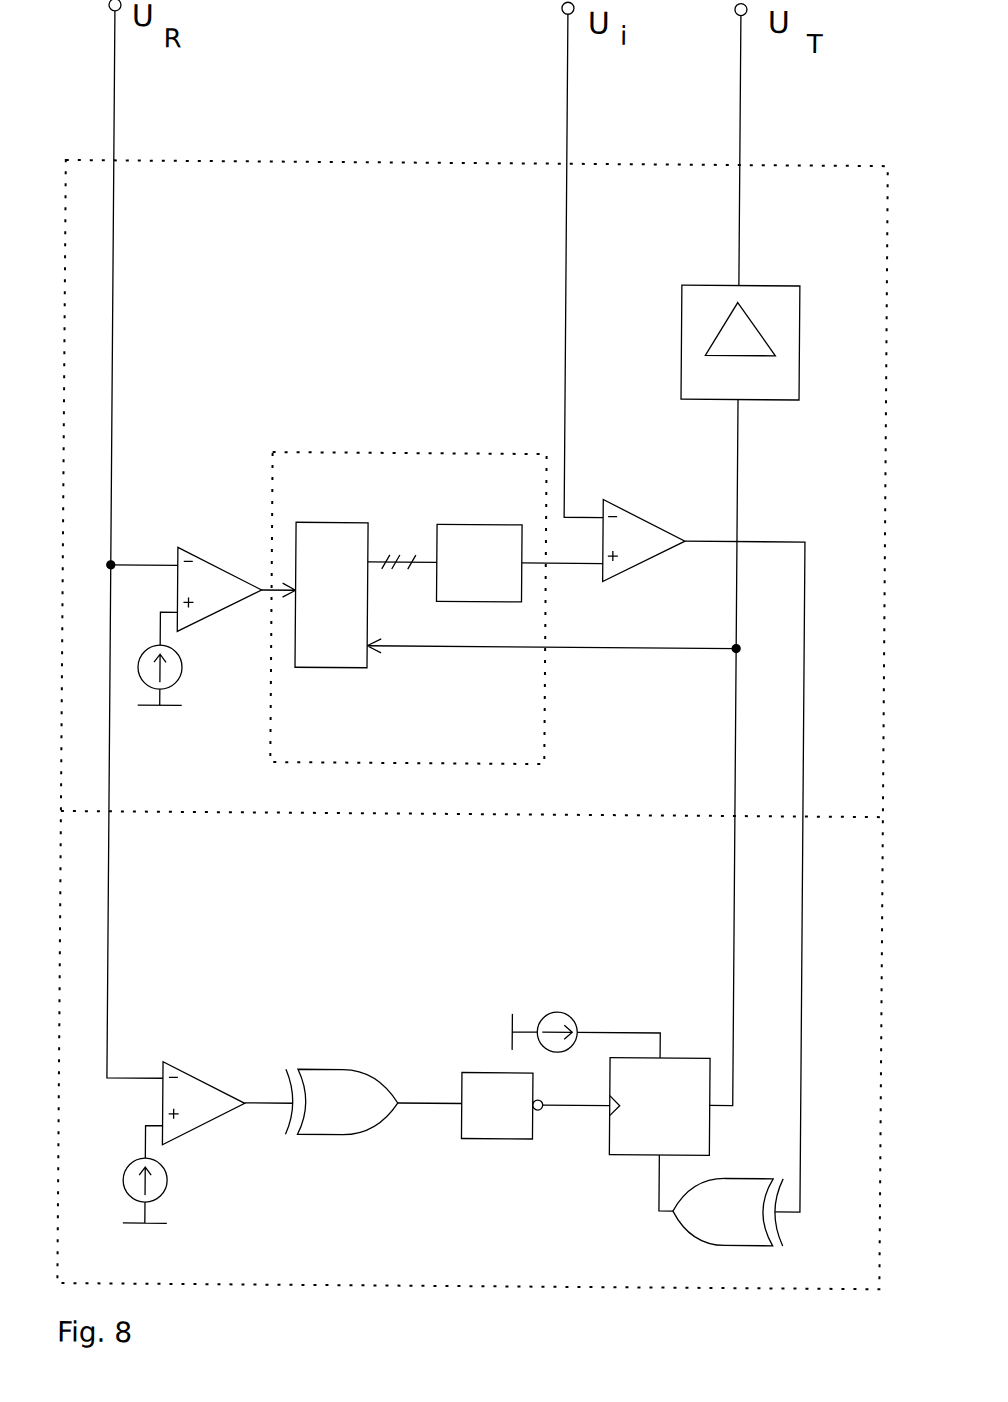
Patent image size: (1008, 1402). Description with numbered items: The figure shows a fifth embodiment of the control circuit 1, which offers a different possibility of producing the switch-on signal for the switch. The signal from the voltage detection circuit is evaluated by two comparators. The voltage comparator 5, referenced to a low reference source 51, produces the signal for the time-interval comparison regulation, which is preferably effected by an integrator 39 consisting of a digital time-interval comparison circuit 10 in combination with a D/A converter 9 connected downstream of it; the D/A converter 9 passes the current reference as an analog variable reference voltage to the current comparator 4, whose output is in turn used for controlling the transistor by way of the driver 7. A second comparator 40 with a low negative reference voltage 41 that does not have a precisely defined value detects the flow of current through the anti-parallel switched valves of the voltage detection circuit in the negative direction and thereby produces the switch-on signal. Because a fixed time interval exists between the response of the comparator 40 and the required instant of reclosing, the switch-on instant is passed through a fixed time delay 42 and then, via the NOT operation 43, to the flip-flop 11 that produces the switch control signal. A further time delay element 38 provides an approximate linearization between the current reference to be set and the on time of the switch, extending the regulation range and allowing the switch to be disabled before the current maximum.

The control circuit 1 is at (268, 158).
The current comparator 4 is at (652, 548).
The voltage comparator 5 is at (226, 600).
The driver 7 is at (711, 290).
The D/A converter 9 is at (461, 527).
The time-interval comparator circuit 10 is at (345, 657).
The flip-flop 11 is at (619, 1142).
The time delay element 38 is at (709, 1217).
The integrator 39 is at (537, 704).
The second comparator 40 is at (213, 1112).
The negative reference voltage 41 is at (169, 1189).
The time delay 42 is at (341, 1076).
The NOT operation 43 is at (502, 1129).
The current source 51 is at (181, 674).